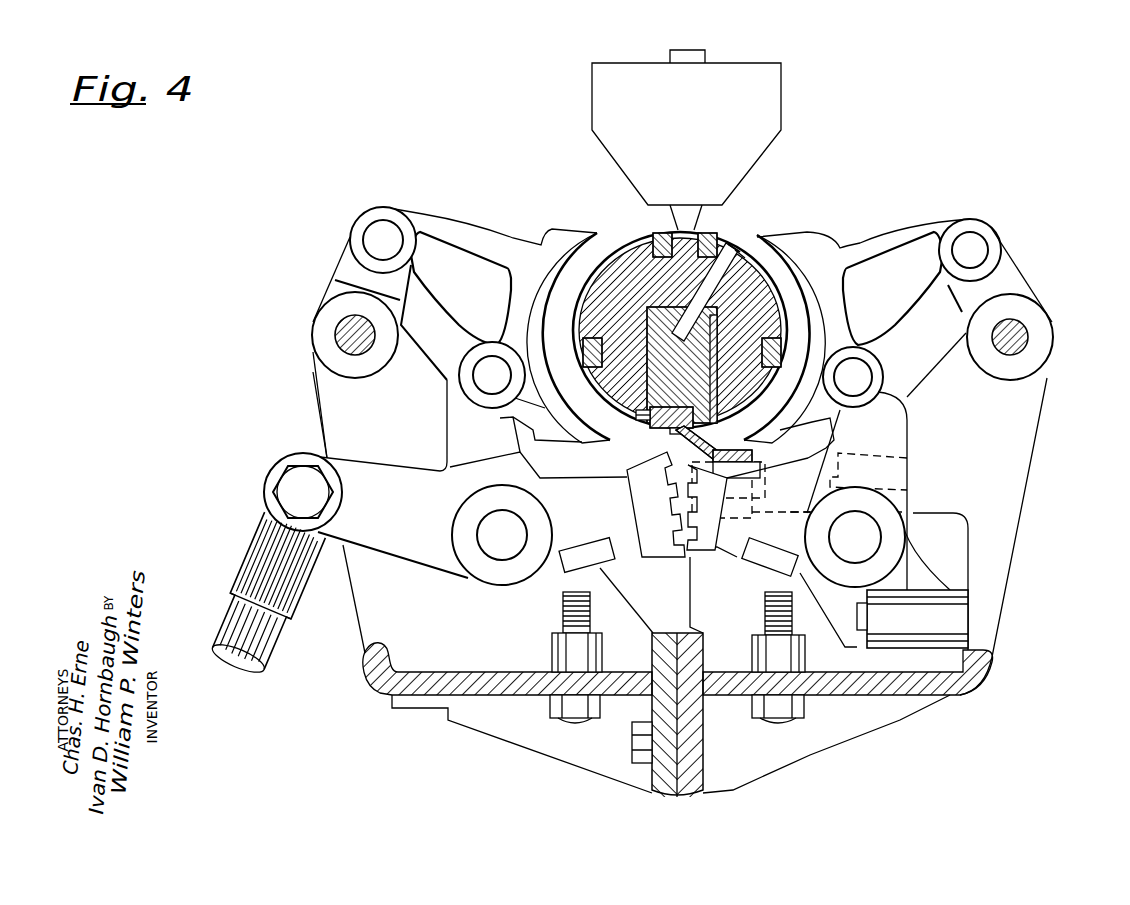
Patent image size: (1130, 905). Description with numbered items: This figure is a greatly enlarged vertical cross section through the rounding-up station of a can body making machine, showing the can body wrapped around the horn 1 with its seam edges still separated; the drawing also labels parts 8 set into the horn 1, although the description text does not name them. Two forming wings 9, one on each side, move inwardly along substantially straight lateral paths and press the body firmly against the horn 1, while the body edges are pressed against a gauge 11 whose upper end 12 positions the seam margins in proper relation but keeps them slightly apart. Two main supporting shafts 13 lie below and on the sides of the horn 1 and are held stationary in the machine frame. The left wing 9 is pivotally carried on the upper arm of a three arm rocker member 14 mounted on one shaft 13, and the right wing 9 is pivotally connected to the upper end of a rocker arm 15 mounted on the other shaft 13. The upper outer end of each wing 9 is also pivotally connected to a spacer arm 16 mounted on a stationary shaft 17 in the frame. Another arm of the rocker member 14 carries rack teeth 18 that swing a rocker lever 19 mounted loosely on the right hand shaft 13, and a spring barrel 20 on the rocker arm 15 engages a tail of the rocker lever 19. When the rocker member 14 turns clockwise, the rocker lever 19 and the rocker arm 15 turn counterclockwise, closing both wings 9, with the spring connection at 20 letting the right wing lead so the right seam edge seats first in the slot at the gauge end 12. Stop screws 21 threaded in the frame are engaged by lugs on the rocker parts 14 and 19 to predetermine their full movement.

The horn 1 is at (628, 243).
The blocks 8 is at (658, 231).
The forming wings 9 is at (527, 273).
The gauge member 11 is at (760, 460).
The upper end of the gauge 12 is at (677, 437).
The main supporting shafts 13 is at (495, 543).
The three arm rocker member 14 is at (412, 492).
The rocker arm 15 is at (887, 435).
The spacer arm 16 is at (355, 268).
The stationary shaft 17 is at (340, 337).
The rack teeth 18 is at (717, 504).
The rocker lever 19 is at (775, 525).
The spring barrel 20 is at (862, 642).
The stop screws 21 is at (563, 613).